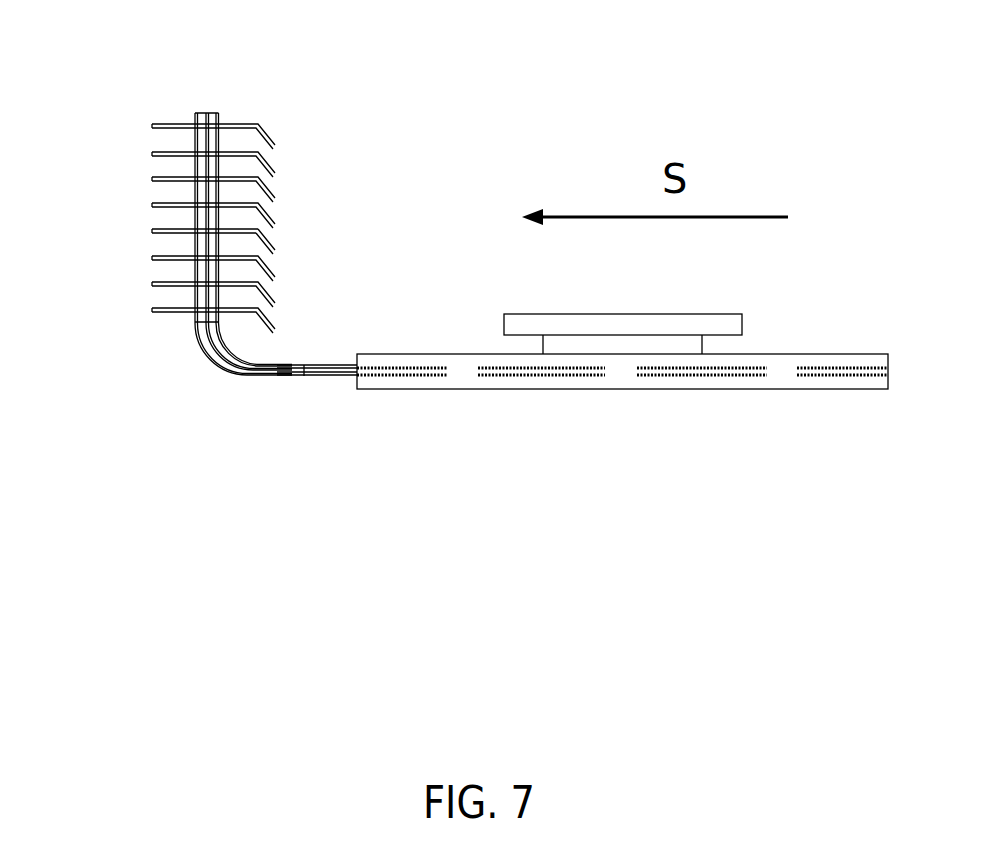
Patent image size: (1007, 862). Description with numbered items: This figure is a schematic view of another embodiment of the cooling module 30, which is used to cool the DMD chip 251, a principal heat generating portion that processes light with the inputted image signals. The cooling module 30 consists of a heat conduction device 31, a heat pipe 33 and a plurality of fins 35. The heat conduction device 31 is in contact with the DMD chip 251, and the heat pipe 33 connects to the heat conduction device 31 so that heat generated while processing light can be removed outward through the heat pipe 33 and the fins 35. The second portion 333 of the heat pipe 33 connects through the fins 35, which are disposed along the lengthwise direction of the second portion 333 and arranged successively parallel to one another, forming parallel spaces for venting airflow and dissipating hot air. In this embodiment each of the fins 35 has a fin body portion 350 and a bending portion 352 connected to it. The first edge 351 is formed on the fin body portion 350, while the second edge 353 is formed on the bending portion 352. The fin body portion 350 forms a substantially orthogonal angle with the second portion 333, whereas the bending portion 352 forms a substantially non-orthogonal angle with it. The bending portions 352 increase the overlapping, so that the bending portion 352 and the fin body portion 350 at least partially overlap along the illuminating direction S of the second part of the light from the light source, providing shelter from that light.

The cooling module 30 is at (185, 440).
The heat conduction device 31 is at (704, 402).
The heat pipe 33 is at (327, 377).
The second portion 333 is at (208, 113).
The fin 35 is at (357, 194).
The fin body portion 350 is at (170, 125).
The first edge 351 is at (153, 228).
The bending portion 352 is at (270, 138).
The second edge 353 is at (273, 248).
The DMD chip 251 is at (727, 313).